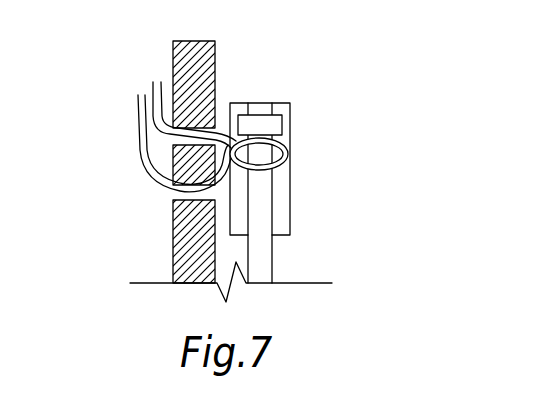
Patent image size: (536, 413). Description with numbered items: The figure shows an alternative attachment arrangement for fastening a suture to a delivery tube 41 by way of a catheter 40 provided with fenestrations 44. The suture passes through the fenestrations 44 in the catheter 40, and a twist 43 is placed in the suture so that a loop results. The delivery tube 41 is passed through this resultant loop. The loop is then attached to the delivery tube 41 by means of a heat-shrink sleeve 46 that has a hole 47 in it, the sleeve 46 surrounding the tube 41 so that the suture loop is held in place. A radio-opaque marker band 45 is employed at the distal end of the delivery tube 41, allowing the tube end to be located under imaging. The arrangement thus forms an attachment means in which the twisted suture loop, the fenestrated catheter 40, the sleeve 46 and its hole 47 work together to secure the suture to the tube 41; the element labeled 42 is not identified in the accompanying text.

The catheter 40 is at (131, 27).
The delivery tube 41 is at (255, 270).
The wire 42 is at (143, 170).
The twist 43 is at (233, 150).
The fenestrations 44 is at (166, 156).
The radio-opaque marker band 45 is at (258, 125).
The heat-shrink sleeve 46 is at (292, 138).
The hole 47 is at (237, 202).